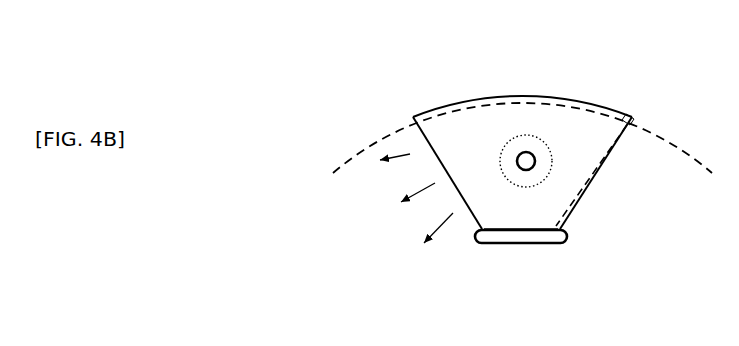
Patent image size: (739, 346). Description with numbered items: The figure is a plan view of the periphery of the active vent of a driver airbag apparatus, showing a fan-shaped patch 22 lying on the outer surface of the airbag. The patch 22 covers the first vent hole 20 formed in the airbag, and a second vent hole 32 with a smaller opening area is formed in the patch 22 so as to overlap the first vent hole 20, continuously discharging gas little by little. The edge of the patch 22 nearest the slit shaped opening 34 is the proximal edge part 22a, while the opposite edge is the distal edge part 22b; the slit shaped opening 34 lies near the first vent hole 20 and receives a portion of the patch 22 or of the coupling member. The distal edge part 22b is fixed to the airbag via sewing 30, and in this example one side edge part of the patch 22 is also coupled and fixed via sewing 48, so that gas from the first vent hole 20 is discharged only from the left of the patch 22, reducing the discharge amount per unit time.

The sewing 30 is at (445, 116).
The first vent hole 20 is at (503, 150).
The distal edge part 22b is at (550, 110).
The second vent hole 32 is at (536, 155).
The patch 22 is at (606, 161).
The sewing 48 is at (578, 205).
The proximal edge part 22a is at (510, 244).
The opening 34 is at (542, 244).